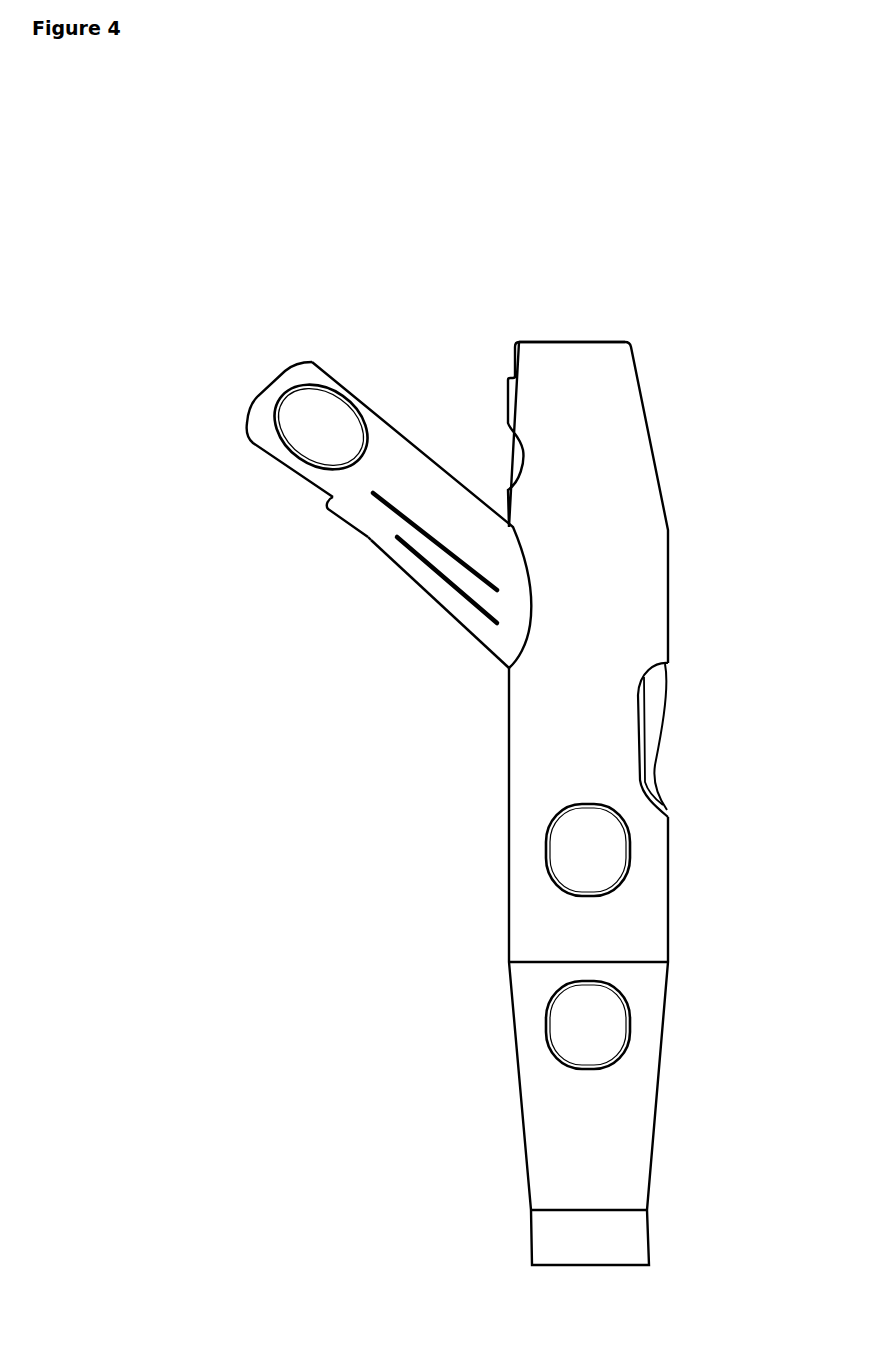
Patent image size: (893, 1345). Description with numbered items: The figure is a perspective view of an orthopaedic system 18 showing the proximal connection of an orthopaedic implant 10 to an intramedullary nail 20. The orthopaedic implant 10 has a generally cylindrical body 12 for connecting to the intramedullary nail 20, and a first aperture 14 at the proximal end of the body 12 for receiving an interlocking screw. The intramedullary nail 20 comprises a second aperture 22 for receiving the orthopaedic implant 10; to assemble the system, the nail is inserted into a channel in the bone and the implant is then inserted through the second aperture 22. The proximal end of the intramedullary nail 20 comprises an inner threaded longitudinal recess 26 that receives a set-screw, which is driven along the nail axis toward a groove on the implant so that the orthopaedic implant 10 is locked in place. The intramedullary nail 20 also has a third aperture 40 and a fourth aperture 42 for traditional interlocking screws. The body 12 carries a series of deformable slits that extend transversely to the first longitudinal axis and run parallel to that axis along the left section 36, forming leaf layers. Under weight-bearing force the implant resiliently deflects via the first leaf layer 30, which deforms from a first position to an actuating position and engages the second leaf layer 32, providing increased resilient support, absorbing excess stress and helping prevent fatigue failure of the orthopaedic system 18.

The orthopaedic implant 10 is at (397, 372).
The body 12 is at (442, 459).
The first aperture 14 is at (291, 428).
The orthopaedic system 18 is at (254, 832).
The intramedullary nail 20 is at (683, 952).
The second aperture 22 is at (656, 740).
The inner threaded longitudinal recess 26 is at (578, 316).
The first leaf layer 30 is at (321, 515).
The second leaf layer 32 is at (361, 548).
The left section 36 is at (466, 583).
The third aperture 40 is at (557, 855).
The fourth aperture 42 is at (557, 1028).